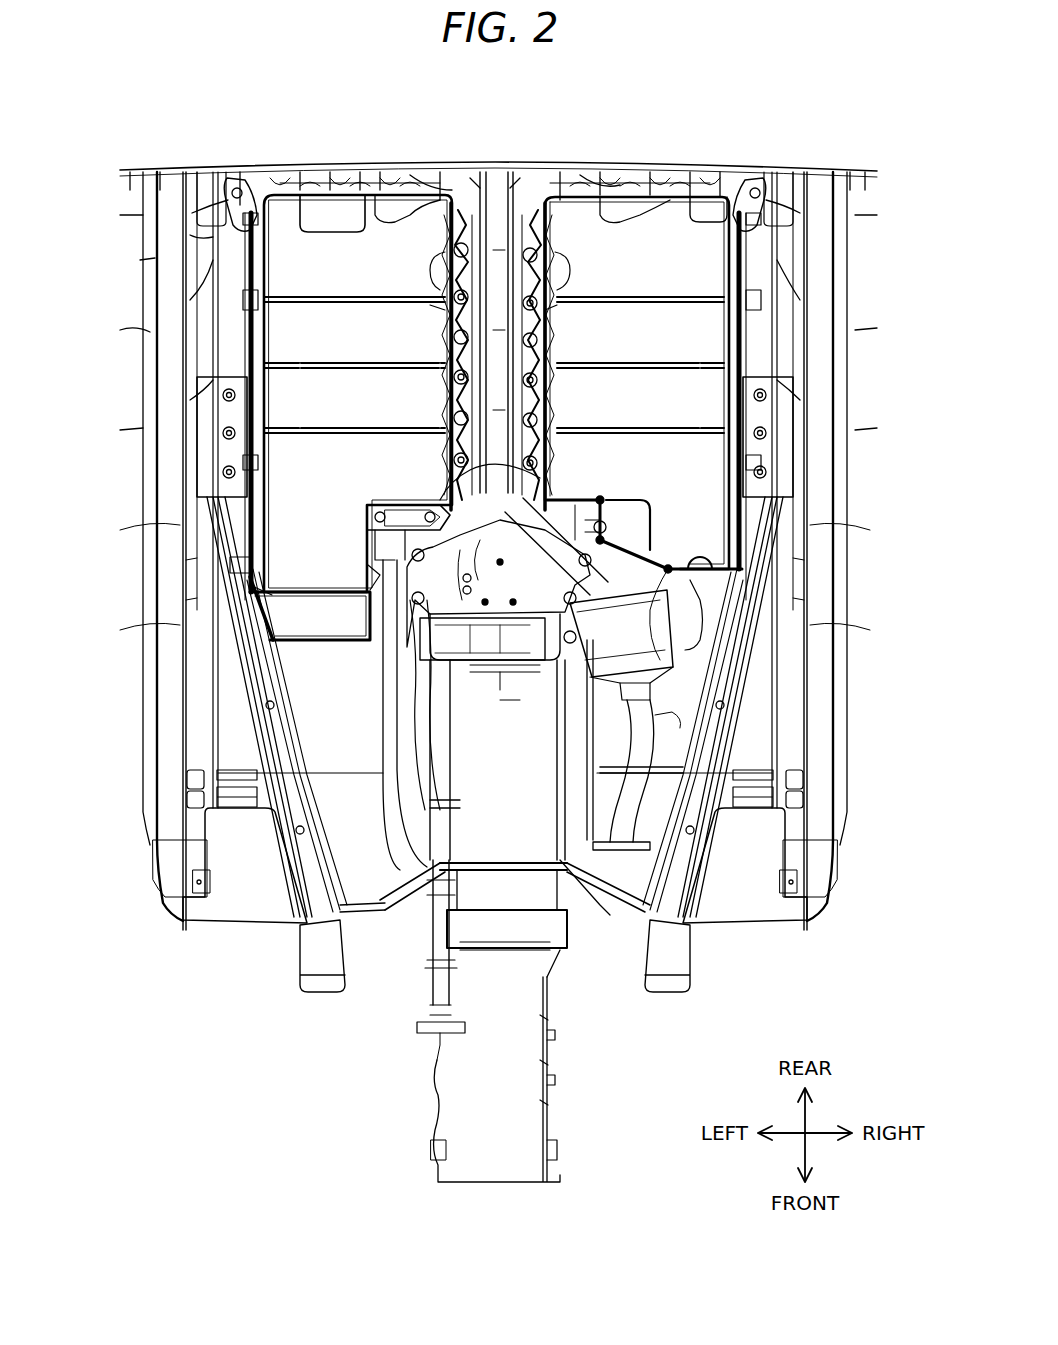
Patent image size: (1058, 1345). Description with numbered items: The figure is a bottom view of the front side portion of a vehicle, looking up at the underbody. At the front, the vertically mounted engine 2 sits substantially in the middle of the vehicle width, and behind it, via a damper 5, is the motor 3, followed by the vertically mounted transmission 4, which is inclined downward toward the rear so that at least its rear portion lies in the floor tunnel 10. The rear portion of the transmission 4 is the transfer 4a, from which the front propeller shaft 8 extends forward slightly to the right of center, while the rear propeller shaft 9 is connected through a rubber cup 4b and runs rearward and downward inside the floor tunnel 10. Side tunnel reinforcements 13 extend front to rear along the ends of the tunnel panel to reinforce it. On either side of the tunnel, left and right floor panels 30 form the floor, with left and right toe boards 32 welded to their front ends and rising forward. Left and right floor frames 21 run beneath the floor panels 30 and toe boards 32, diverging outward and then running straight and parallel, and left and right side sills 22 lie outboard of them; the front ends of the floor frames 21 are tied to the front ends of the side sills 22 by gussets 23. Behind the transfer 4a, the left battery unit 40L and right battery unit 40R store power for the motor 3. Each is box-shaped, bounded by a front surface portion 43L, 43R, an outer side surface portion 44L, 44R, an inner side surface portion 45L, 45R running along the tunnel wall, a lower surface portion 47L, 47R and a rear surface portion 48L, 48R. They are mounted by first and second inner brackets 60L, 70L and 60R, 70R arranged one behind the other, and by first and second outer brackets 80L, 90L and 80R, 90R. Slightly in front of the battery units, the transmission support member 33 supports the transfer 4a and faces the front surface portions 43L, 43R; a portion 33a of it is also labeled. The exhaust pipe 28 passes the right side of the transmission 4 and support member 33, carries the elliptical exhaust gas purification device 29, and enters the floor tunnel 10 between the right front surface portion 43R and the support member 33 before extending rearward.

The engine 2 is at (533, 1058).
The motor 3 is at (523, 873).
The transmission 4 is at (467, 803).
The transfer 4a is at (458, 640).
The rubber cup 4b is at (430, 490).
The damper 5 is at (540, 927).
The front propeller shaft 8 is at (413, 925).
The rear propeller shaft 9 is at (445, 510).
The floor tunnel 10 is at (588, 917).
The side tunnel reinforcements 13 is at (407, 683).
The floor frames 21 is at (247, 618).
The side sills 22 is at (167, 533).
The gussets 23 is at (230, 913).
The exhaust pipe 28 is at (555, 335).
The exhaust gas purification device 29 is at (673, 625).
The floor panels 30 is at (343, 652).
The toe boards 32 is at (330, 775).
The transmission support member 33 is at (572, 565).
The connecting portion 33a is at (378, 575).
The left battery unit 40L is at (351, 329).
The right battery unit 40R is at (740, 339).
The left front surface portion 43L is at (243, 652).
The right front surface portion 43R is at (727, 578).
The left outer side surface portion 44L is at (250, 335).
The right outer side surface portion 44R is at (765, 332).
The left inner side surface portion 45L is at (470, 185).
The right inner side surface portion 45R is at (517, 190).
The left lower surface portion 47L is at (395, 190).
The right lower surface portion 47R is at (620, 190).
The left rear surface portion 48L is at (320, 190).
The right rear surface portion 48R is at (700, 190).
The first left inner bracket 60L is at (425, 405).
The first right inner bracket 60R is at (560, 447).
The second left inner bracket 70L is at (445, 297).
The second right inner bracket 70R is at (555, 308).
The first left outer bracket 80L is at (222, 455).
The first right outer bracket 80R is at (778, 447).
The second left outer bracket 90L is at (232, 210).
The second right outer bracket 90R is at (757, 206).